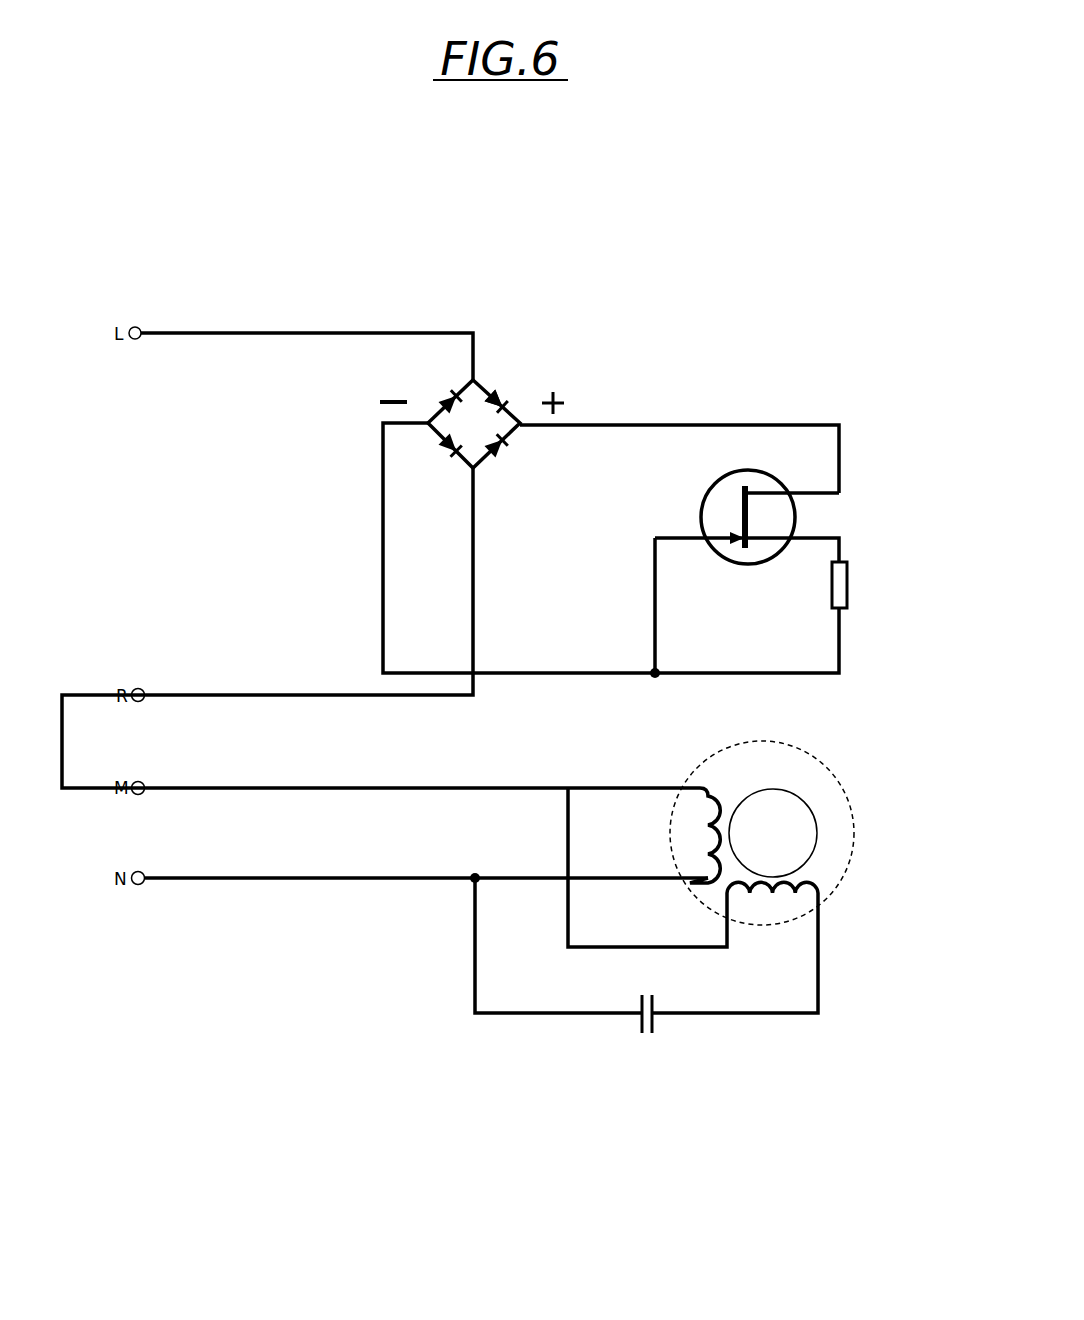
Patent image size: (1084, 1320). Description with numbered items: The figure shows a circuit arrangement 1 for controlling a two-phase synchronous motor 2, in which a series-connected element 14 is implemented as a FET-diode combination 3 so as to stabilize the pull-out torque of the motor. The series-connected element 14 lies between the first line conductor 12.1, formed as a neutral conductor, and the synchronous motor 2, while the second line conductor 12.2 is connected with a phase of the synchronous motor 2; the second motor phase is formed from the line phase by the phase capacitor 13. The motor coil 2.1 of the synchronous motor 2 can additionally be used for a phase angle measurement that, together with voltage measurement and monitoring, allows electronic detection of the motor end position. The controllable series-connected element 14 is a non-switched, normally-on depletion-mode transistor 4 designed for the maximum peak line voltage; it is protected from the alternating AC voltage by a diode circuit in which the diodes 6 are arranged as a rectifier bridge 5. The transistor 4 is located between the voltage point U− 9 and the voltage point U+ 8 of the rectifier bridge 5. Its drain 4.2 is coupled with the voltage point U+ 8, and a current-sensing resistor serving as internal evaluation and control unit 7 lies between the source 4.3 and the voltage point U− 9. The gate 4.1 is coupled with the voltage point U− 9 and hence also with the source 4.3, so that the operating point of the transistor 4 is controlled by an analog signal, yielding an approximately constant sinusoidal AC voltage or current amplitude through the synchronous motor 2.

The circuit arrangement 1 is at (739, 192).
The synchronous motor 2 is at (855, 825).
The motor coil 2.1 is at (758, 902).
The FET-diode combination 3 is at (450, 605).
The series-connected element 14 is at (318, 613).
The transistor 4 is at (742, 468).
The gate 4.1 is at (685, 501).
The drain 4.2 is at (793, 483).
The source 4.3 is at (758, 540).
The rectifier bridge 5 is at (420, 380).
The diode 6 is at (490, 385).
The internal evaluation and control unit 7 is at (840, 588).
The voltage point U+ 8 is at (530, 407).
The voltage point U− 9 is at (423, 433).
The first line conductor 12.1 is at (263, 333).
The second line conductor 12.2 is at (255, 878).
The phase capacitor 13 is at (633, 1025).